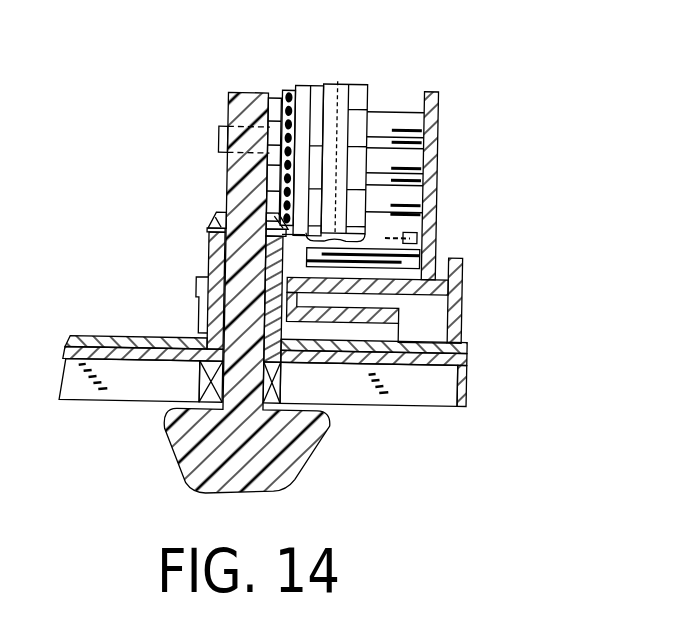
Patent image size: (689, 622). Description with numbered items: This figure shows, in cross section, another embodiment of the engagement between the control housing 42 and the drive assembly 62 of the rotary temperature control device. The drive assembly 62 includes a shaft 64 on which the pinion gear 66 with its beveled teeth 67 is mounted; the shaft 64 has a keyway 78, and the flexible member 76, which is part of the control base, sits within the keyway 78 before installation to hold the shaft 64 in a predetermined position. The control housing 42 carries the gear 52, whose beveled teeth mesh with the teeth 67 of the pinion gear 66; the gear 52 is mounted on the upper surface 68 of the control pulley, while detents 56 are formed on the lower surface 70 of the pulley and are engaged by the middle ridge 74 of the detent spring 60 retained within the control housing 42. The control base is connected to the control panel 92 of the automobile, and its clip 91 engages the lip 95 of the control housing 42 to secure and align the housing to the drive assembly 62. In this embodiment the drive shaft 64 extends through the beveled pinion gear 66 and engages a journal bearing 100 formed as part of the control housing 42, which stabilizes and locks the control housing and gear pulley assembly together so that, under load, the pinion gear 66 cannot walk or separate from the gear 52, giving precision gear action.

The control housing 42 is at (401, 77).
The gear 52 is at (282, 89).
The detents 56 is at (414, 201).
The detent spring 60 is at (403, 257).
The drive assembly 62 is at (180, 301).
The shaft 64 is at (234, 178).
The pinion gear 66 is at (198, 224).
The beveled teeth 67 is at (214, 221).
The upper surface 68 is at (319, 86).
The lower surface 70 is at (361, 88).
The middle ridge 74 is at (398, 229).
The flexible member 76 is at (369, 311).
The keyway 78 is at (289, 324).
The clip 91 is at (450, 304).
The control panel 92 is at (460, 387).
The lip 95 is at (431, 285).
The journal bearing 100 is at (213, 135).